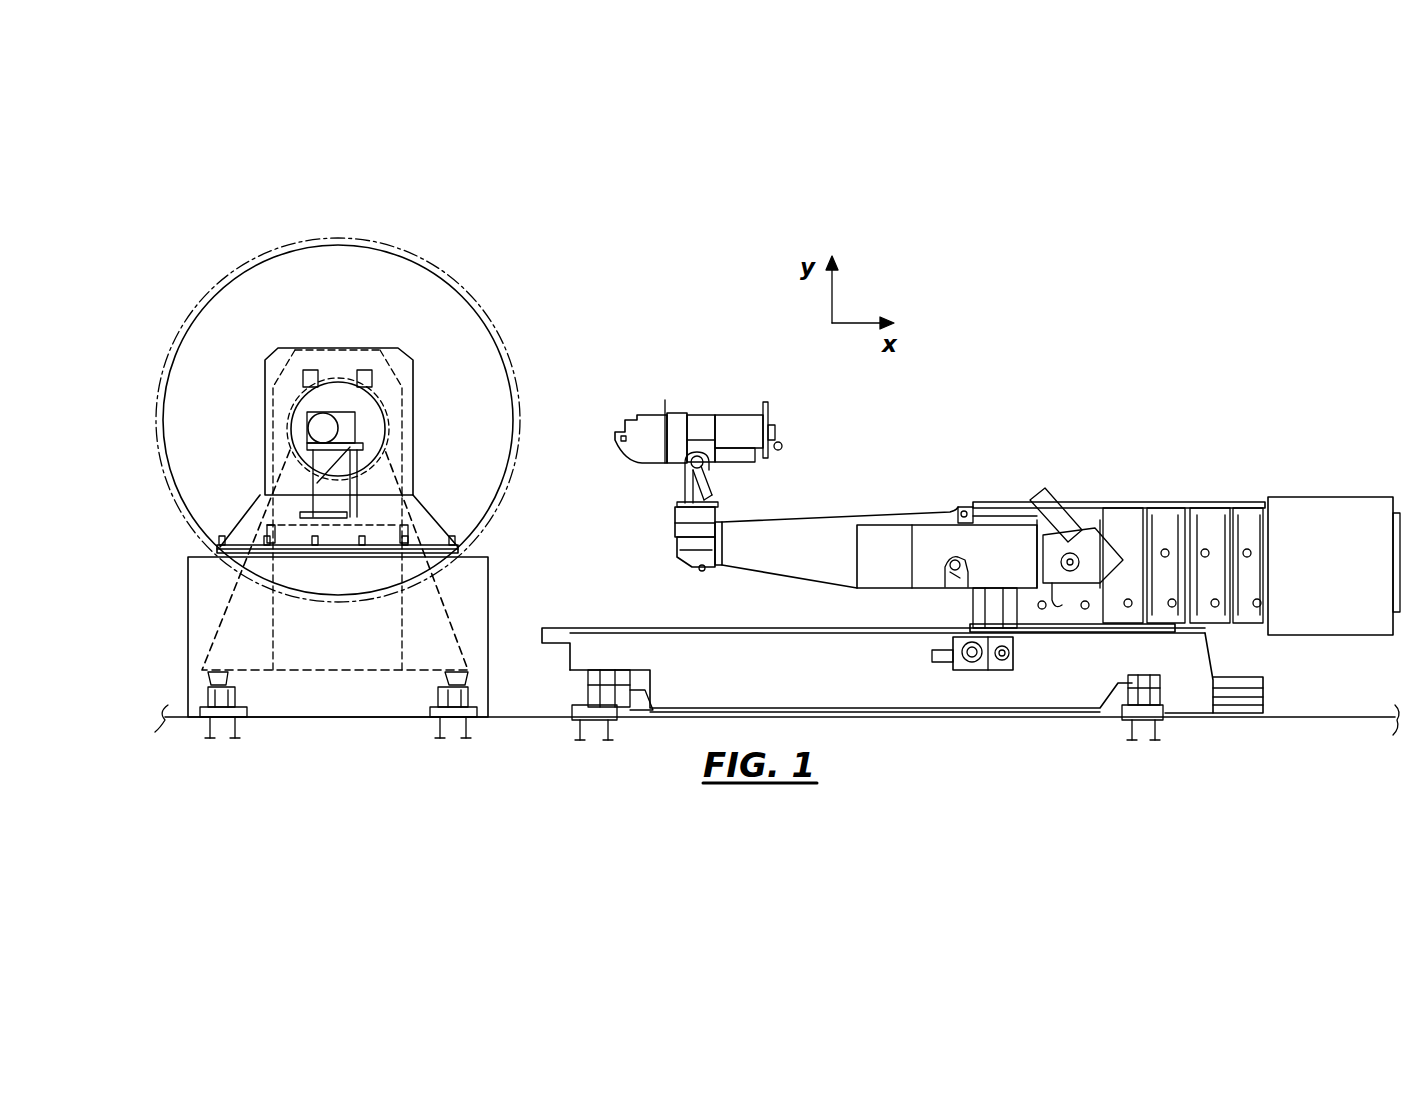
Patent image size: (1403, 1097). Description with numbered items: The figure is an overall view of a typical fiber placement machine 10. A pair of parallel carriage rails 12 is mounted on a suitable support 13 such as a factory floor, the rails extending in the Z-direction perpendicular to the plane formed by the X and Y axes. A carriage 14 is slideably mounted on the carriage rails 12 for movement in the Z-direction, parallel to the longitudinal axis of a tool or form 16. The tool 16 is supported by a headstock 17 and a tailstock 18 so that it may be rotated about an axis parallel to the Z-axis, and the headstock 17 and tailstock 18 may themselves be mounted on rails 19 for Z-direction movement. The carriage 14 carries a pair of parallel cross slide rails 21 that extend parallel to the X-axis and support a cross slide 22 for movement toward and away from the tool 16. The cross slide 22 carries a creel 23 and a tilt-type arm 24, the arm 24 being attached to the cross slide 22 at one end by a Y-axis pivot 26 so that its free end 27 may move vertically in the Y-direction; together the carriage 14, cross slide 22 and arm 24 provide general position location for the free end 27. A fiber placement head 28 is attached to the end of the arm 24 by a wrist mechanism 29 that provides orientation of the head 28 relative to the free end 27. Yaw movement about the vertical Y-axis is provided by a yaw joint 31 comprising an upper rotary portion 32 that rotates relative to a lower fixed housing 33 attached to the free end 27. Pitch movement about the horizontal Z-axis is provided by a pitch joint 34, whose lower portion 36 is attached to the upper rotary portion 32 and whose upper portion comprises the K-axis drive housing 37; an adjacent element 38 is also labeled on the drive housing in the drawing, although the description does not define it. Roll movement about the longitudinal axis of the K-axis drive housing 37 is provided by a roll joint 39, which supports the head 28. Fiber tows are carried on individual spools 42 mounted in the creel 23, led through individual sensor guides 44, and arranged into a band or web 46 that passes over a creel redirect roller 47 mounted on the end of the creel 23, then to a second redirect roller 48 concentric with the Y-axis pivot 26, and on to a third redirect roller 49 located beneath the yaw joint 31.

The fiber placement machine 10 is at (965, 390).
The carriage rails 12 is at (590, 742).
The support 13 is at (1335, 716).
The carriage 14 is at (840, 683).
The tool or form 16 is at (412, 270).
The headstock 17 is at (413, 358).
The tailstock 18 is at (405, 642).
The rails 19 is at (220, 740).
The cross slide rails 21 is at (772, 626).
The cross slide 22 is at (1150, 632).
The creel 23 is at (1260, 578).
The tilt-type arm 24 is at (900, 585).
The Y-axis pivot 26 is at (975, 580).
The free end 27 is at (727, 540).
The fiber placement head 28 is at (648, 432).
The wrist mechanism 29 is at (740, 487).
The yaw joint 31 is at (675, 534).
The upper rotary portion 32 is at (672, 518).
The lower fixed housing 33 is at (680, 551).
The pitch joint 34 is at (690, 464).
The lower portion 36 is at (690, 482).
The K-axis drive housing 37 is at (700, 425).
The motor 38 is at (764, 448).
The roll joint 39 is at (665, 400).
The spools 42 is at (1247, 550).
The sensor guides 44 is at (1128, 508).
The band or web 46 is at (978, 503).
The creel redirect roller 47 is at (958, 510).
The second redirect roller 48 is at (958, 586).
The third redirect roller 49 is at (702, 571).